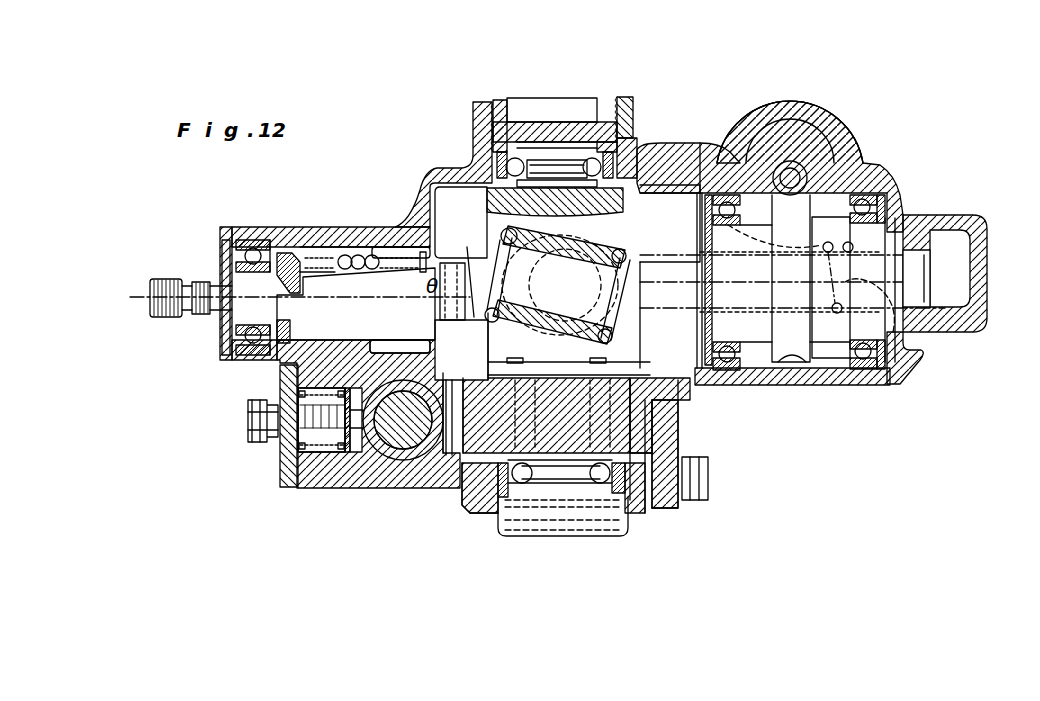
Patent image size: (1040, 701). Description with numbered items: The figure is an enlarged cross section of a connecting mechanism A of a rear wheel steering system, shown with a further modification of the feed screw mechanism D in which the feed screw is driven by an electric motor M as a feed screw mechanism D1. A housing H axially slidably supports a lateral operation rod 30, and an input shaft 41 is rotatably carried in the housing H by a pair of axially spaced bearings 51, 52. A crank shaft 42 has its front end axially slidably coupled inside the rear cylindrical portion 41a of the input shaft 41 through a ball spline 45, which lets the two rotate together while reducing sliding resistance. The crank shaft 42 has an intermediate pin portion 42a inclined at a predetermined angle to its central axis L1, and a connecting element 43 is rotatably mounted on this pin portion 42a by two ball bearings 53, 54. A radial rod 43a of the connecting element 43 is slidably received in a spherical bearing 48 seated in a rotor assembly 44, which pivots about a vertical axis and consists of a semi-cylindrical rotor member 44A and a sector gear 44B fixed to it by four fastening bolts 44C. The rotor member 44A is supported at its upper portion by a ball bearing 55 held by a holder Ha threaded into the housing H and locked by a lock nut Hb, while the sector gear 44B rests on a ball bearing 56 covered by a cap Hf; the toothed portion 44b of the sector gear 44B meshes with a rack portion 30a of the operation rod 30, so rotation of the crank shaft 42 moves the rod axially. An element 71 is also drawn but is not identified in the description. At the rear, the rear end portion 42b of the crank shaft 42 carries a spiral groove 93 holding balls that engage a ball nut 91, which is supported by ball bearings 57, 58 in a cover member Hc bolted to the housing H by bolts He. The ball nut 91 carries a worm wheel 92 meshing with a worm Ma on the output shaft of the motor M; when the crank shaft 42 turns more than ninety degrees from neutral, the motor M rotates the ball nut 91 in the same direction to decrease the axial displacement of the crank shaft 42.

The input shaft 41 is at (186, 320).
The rear cylindrical portion 41a is at (305, 246).
The crank shaft 42 is at (396, 284).
The intermediate pin portion 42a is at (492, 327).
The rear end portion 42b is at (905, 268).
The connecting element 43 is at (625, 213).
The radial rod 43a is at (618, 336).
The rotor assembly 44 is at (640, 405).
The semi-cylindrical rotor member 44A is at (665, 172).
The sector gear 44B is at (625, 412).
The fastening bolts 44C is at (525, 370).
The toothed portion 44b is at (460, 490).
The ball spline 45 is at (350, 252).
The spherical bearing 48 is at (480, 238).
The bearing 51 is at (253, 246).
The bearing 52 is at (392, 244).
The ball bearing 53 is at (503, 233).
The ball bearing 54 is at (630, 250).
The ball bearing 55 is at (630, 160).
The ball bearing 56 is at (583, 492).
The ball bearing 57 is at (730, 366).
The ball bearing 58 is at (862, 366).
The piston 71 is at (384, 440).
The operation rod 30 is at (408, 458).
The rack portion 30a is at (447, 460).
The ball nut 91 is at (830, 335).
The worm wheel 92 is at (793, 363).
The spiral groove 93 is at (893, 340).
The connecting mechanism A is at (463, 112).
The housing H is at (430, 172).
The holder Ha is at (606, 100).
The lock nut Hb is at (622, 100).
The cover member Hc is at (985, 320).
The bolts He is at (702, 479).
The cap Hf is at (612, 522).
The electric motor M is at (837, 112).
The worm Ma is at (790, 168).
The feed screw mechanism D is at (888, 207).
The feed screw mechanism D1 is at (822, 228).
The central axis L1 is at (900, 300).